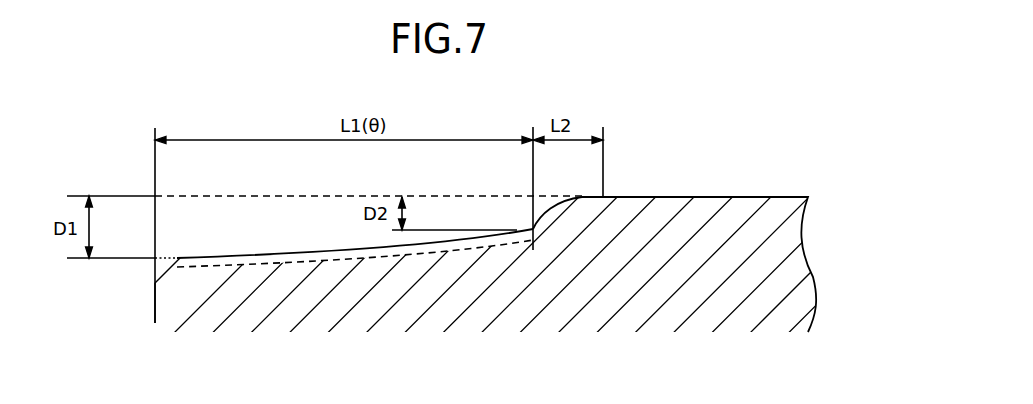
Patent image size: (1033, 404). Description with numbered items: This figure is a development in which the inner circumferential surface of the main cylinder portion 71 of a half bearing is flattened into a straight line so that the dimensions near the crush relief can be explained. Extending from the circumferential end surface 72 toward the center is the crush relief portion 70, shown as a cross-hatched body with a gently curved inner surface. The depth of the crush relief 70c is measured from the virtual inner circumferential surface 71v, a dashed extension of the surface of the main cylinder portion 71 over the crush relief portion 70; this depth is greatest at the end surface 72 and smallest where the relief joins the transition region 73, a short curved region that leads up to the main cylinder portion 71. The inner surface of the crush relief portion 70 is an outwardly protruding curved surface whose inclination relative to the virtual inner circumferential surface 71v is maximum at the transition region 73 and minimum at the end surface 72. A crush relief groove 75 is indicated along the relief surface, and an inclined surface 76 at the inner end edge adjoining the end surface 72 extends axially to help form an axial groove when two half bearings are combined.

The crush relief portion 70 is at (233, 257).
The crush relief 70c is at (184, 218).
The main cylinder portion 71 is at (715, 197).
The virtual inner circumferential surface 71v is at (272, 194).
The end surface 72 is at (155, 305).
The transition region 73 is at (556, 201).
The crush relief groove 75 is at (336, 256).
The inclined surface 76 is at (168, 268).